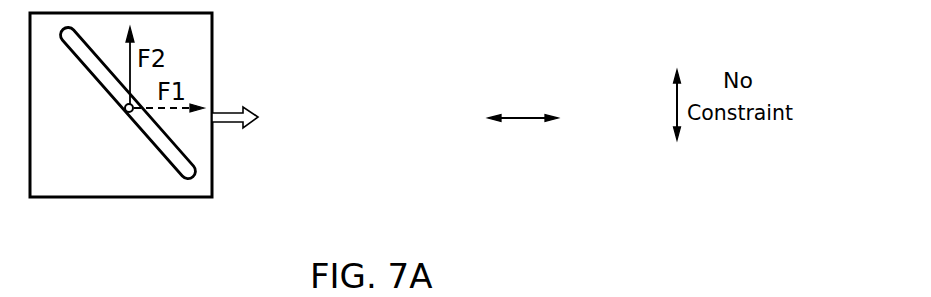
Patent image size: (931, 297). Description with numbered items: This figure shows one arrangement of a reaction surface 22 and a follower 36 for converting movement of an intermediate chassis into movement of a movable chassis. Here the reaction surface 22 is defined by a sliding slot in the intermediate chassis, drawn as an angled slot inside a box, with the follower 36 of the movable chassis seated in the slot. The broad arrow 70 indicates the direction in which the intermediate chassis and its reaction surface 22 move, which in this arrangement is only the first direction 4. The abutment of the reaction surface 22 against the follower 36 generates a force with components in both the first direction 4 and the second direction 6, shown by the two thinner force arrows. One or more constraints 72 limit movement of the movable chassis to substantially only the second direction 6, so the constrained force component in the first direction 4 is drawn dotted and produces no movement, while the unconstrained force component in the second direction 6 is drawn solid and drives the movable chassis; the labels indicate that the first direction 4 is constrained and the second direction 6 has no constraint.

The reaction surface 22 is at (157, 153).
The follower 36 is at (126, 111).
The broad arrow 70 is at (249, 108).
The first direction 4 is at (525, 115).
The second direction 6 is at (673, 102).
The constraints 72 is at (532, 180).